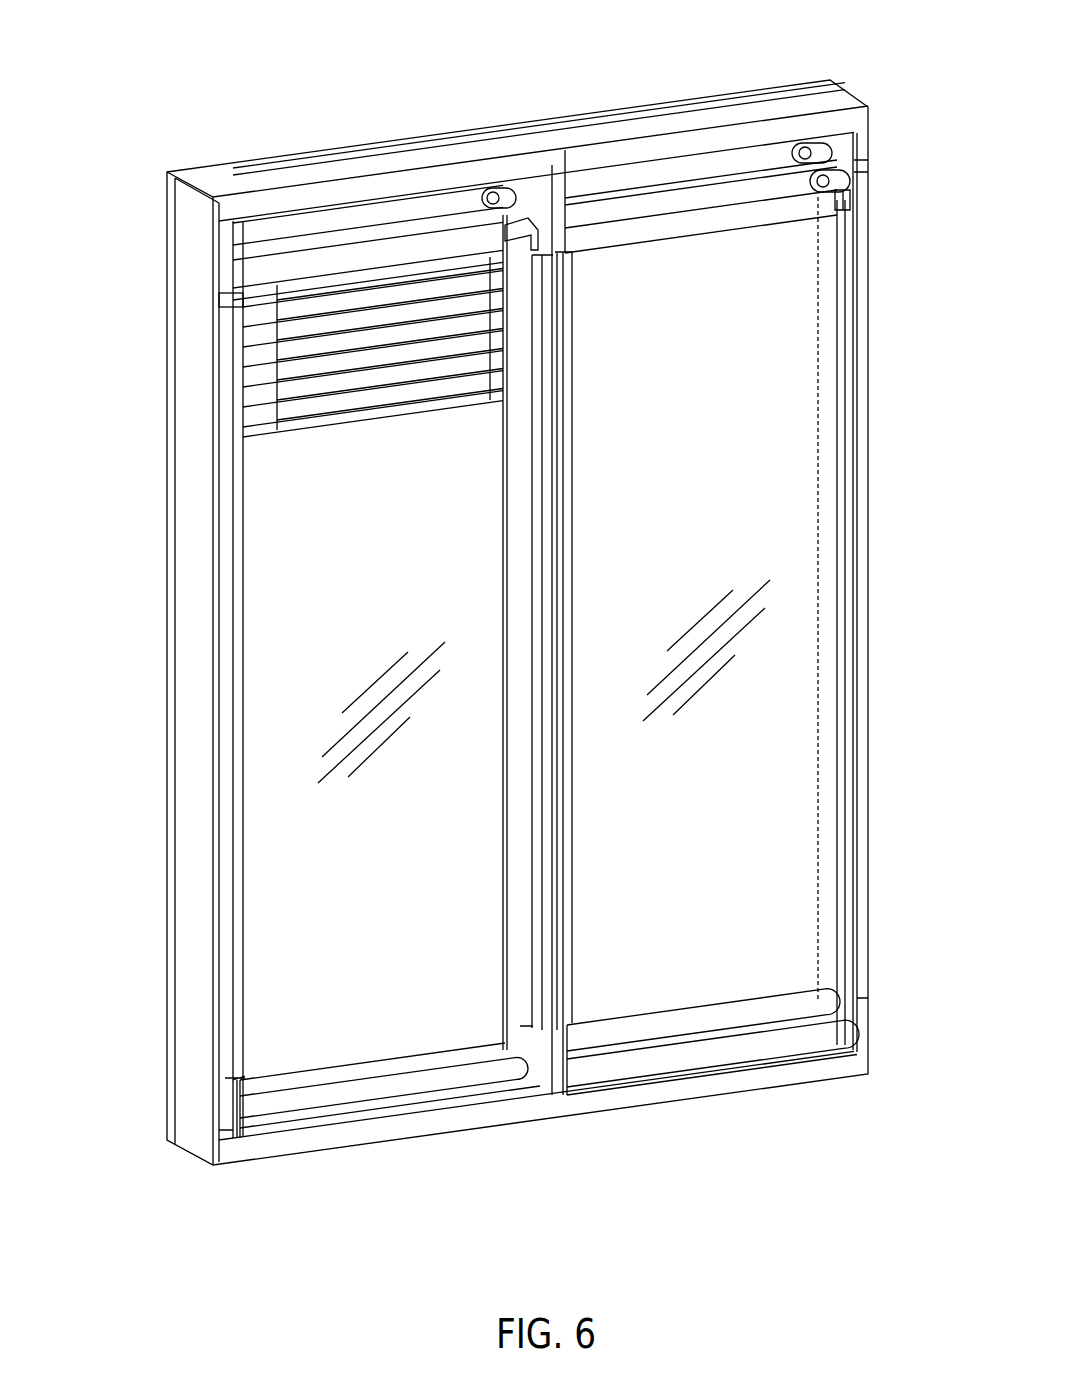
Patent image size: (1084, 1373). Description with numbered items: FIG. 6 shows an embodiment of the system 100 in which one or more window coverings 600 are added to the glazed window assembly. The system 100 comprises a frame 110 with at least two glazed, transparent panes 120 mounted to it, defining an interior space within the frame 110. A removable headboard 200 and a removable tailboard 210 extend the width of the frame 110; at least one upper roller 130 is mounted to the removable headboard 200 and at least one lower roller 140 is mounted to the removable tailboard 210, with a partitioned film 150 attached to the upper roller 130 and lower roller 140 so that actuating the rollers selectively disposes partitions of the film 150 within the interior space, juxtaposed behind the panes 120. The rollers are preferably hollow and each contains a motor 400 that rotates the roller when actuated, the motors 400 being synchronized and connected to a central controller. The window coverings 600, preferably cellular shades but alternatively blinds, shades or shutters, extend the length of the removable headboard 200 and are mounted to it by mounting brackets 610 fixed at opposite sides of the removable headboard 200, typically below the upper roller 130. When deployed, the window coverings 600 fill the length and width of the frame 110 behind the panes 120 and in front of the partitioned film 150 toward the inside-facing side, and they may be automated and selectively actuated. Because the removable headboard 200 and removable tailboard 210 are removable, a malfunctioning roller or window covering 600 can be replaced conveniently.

The system 100 is at (160, 42).
The frame 110 is at (180, 690).
The glazed, transparent panes 120 is at (686, 98).
The upper roller 130 is at (430, 207).
The lower roller 140 is at (368, 1090).
The partitioned film 150 is at (820, 205).
The removable headboard 200 is at (217, 285).
The removable tailboard 210 is at (858, 1000).
The motor 400 is at (498, 196).
The window covering 600 is at (404, 408).
The mounting bracket 610 is at (538, 242).